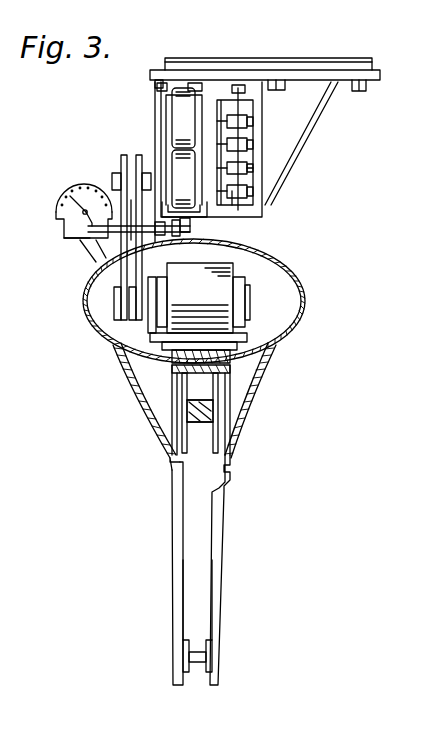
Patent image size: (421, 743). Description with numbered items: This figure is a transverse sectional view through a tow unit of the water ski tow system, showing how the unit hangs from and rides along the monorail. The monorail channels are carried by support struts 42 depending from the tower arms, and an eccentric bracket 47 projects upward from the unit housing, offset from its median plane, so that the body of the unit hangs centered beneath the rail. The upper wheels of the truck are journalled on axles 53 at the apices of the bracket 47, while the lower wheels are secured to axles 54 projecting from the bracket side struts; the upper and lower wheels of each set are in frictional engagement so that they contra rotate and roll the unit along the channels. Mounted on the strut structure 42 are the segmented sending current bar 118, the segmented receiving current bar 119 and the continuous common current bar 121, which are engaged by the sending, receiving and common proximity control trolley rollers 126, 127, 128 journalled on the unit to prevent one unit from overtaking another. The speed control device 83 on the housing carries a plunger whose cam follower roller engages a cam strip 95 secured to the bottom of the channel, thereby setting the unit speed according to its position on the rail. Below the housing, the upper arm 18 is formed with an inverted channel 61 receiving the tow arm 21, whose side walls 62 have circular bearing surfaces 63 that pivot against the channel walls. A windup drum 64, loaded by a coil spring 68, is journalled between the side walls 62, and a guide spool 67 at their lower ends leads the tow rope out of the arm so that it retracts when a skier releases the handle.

The upper arm 18 is at (252, 391).
The tow arm 21 is at (237, 570).
The support struts 42 is at (292, 174).
The eccentric bracket 47 is at (160, 140).
The axles 53 is at (164, 115).
The axles 54 is at (164, 176).
The inverted channel 61 is at (229, 386).
The side walls 62 is at (213, 603).
The bearing surfaces 63 is at (174, 462).
The windup drum 64 is at (192, 470).
The guide spool 67 is at (211, 652).
The coil spring 68 is at (229, 443).
The speed control device 83 is at (100, 184).
The cam strip 95 is at (190, 228).
The segmented sending current bar 118 is at (253, 141).
The segmented receiving current bar 119 is at (253, 176).
The continuous common current bar 121 is at (253, 194).
The sending proximity control trolley roller 126 is at (253, 121).
The receiving proximity control trolley roller 127 is at (253, 152).
The common proximity control trolley roller 128 is at (253, 205).